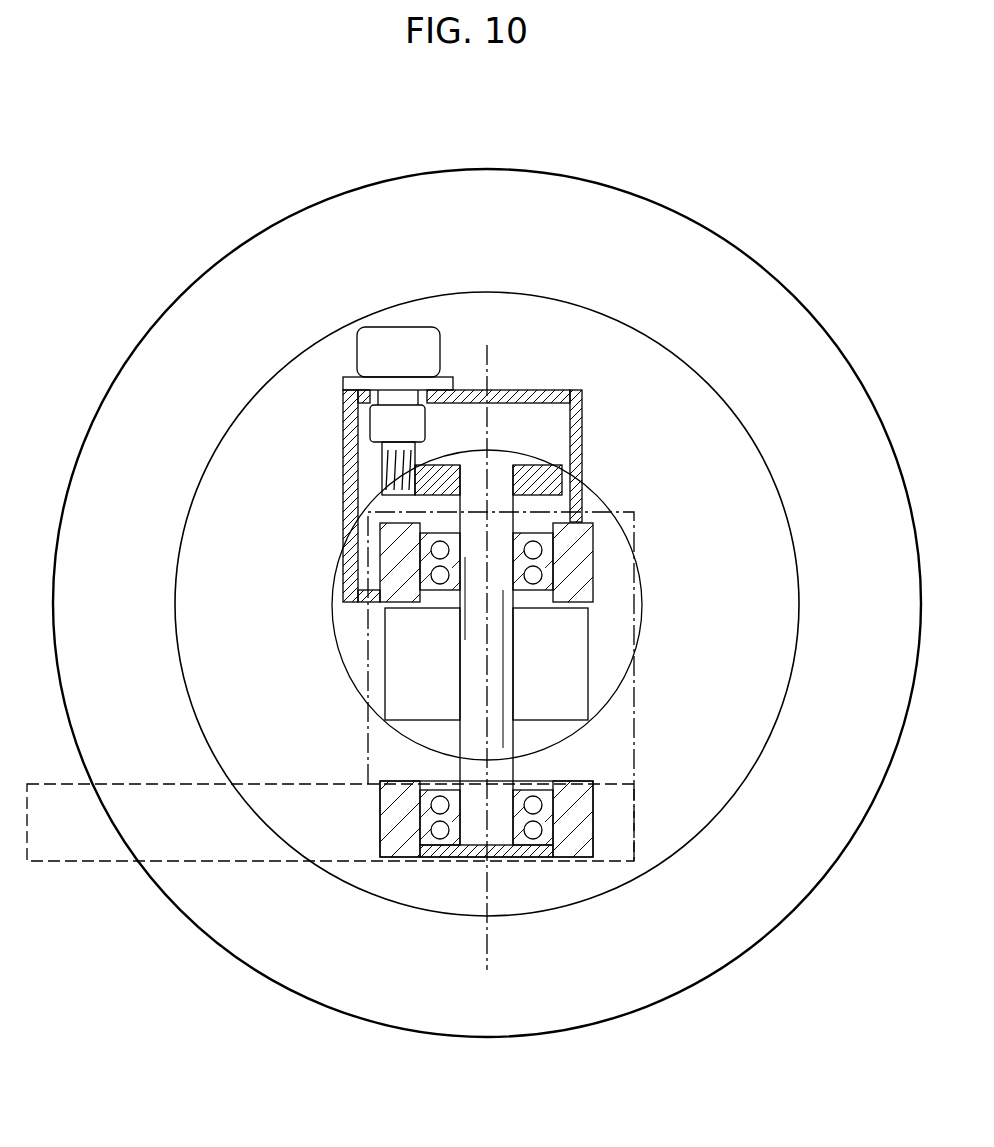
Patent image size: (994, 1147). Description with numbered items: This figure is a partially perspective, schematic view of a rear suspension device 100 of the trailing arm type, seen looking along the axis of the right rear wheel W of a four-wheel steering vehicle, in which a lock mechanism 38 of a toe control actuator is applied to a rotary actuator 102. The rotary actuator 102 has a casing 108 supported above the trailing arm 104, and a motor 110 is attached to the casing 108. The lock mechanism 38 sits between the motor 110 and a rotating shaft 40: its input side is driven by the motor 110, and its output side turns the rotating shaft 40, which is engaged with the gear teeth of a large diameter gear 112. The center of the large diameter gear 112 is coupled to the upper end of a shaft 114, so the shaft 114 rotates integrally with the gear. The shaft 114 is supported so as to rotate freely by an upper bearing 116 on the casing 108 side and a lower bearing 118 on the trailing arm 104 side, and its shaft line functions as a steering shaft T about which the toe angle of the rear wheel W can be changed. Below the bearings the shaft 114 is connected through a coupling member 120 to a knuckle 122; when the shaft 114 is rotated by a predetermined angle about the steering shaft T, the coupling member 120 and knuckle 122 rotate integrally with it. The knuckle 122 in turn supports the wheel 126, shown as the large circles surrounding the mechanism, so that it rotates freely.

The rear suspension device 100 is at (806, 212).
The rear wheel W is at (528, 168).
The wheel 126 is at (710, 387).
The rotary actuator 102 is at (622, 481).
The trailing arm 104 is at (105, 862).
The casing 108 is at (545, 390).
The motor 110 is at (398, 327).
The large diameter gear 112 is at (543, 465).
The shaft 114 is at (460, 680).
The upper bearing 116 is at (557, 547).
The lower bearing 118 is at (593, 798).
The coupling member 120 is at (588, 672).
The knuckle 122 is at (635, 732).
The lock mechanism 38 is at (362, 430).
The rotating shaft 40 is at (383, 450).
The steering shaft T is at (488, 948).